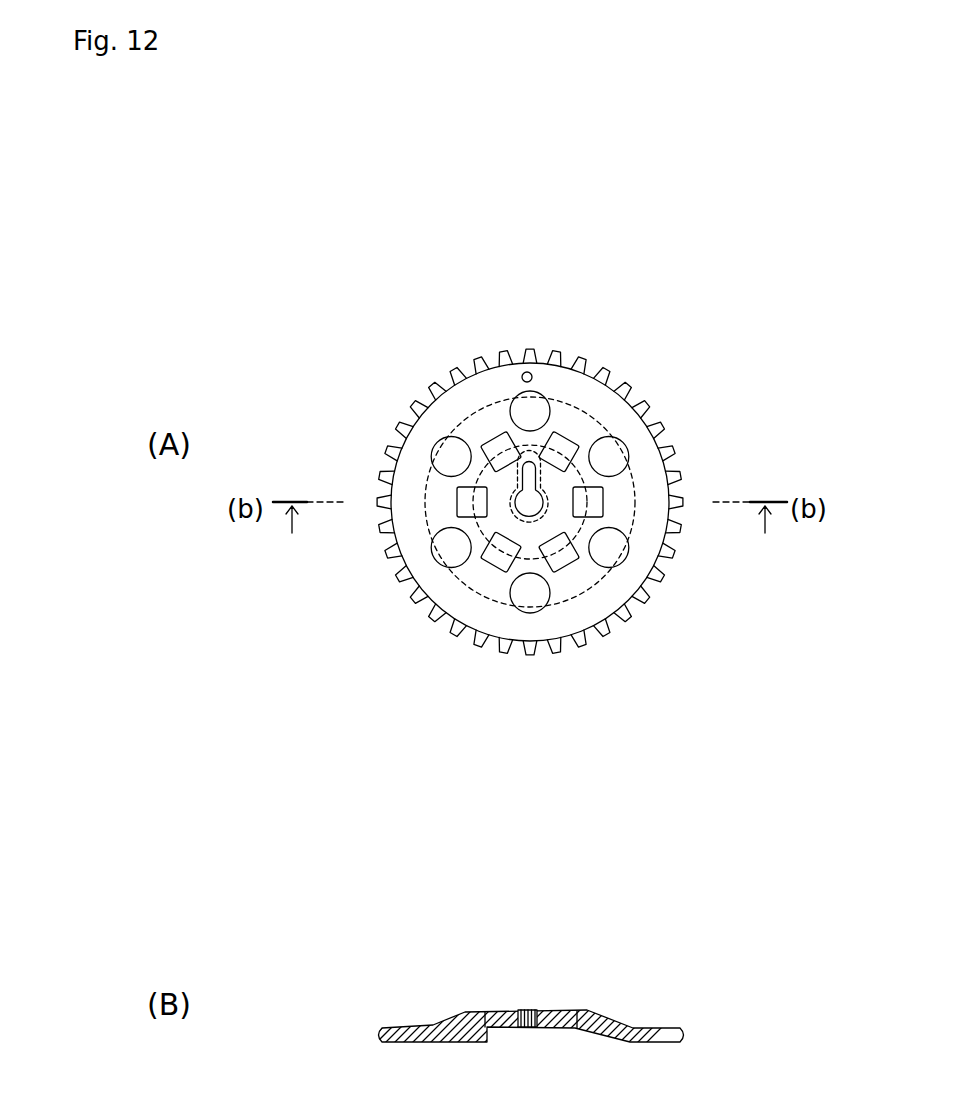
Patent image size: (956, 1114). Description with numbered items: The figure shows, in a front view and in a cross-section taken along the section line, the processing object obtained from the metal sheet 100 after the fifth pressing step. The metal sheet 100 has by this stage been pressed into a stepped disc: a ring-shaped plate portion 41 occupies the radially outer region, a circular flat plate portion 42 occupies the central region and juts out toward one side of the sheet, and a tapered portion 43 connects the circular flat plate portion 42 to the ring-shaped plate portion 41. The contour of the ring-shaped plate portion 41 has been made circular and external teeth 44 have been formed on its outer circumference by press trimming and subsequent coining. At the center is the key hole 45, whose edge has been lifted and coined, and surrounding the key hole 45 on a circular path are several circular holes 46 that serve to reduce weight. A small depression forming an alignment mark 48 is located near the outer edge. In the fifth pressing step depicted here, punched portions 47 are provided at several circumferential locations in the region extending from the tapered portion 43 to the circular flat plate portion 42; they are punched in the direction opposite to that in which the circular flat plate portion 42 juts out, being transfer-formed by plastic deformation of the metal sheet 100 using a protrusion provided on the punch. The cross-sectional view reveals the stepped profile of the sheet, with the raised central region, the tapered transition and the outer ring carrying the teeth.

The metal sheet 100 is at (673, 327).
The ring-shaped plate portion 41 is at (648, 493).
The circular flat plate portion 42 is at (618, 608).
The tapered portion 43 is at (558, 424).
The external teeth 44 is at (633, 407).
The key hole 45 is at (472, 503).
The circular holes 46 is at (509, 408).
The punched portions 47 is at (494, 458).
The alignment mark 48 is at (526, 372).